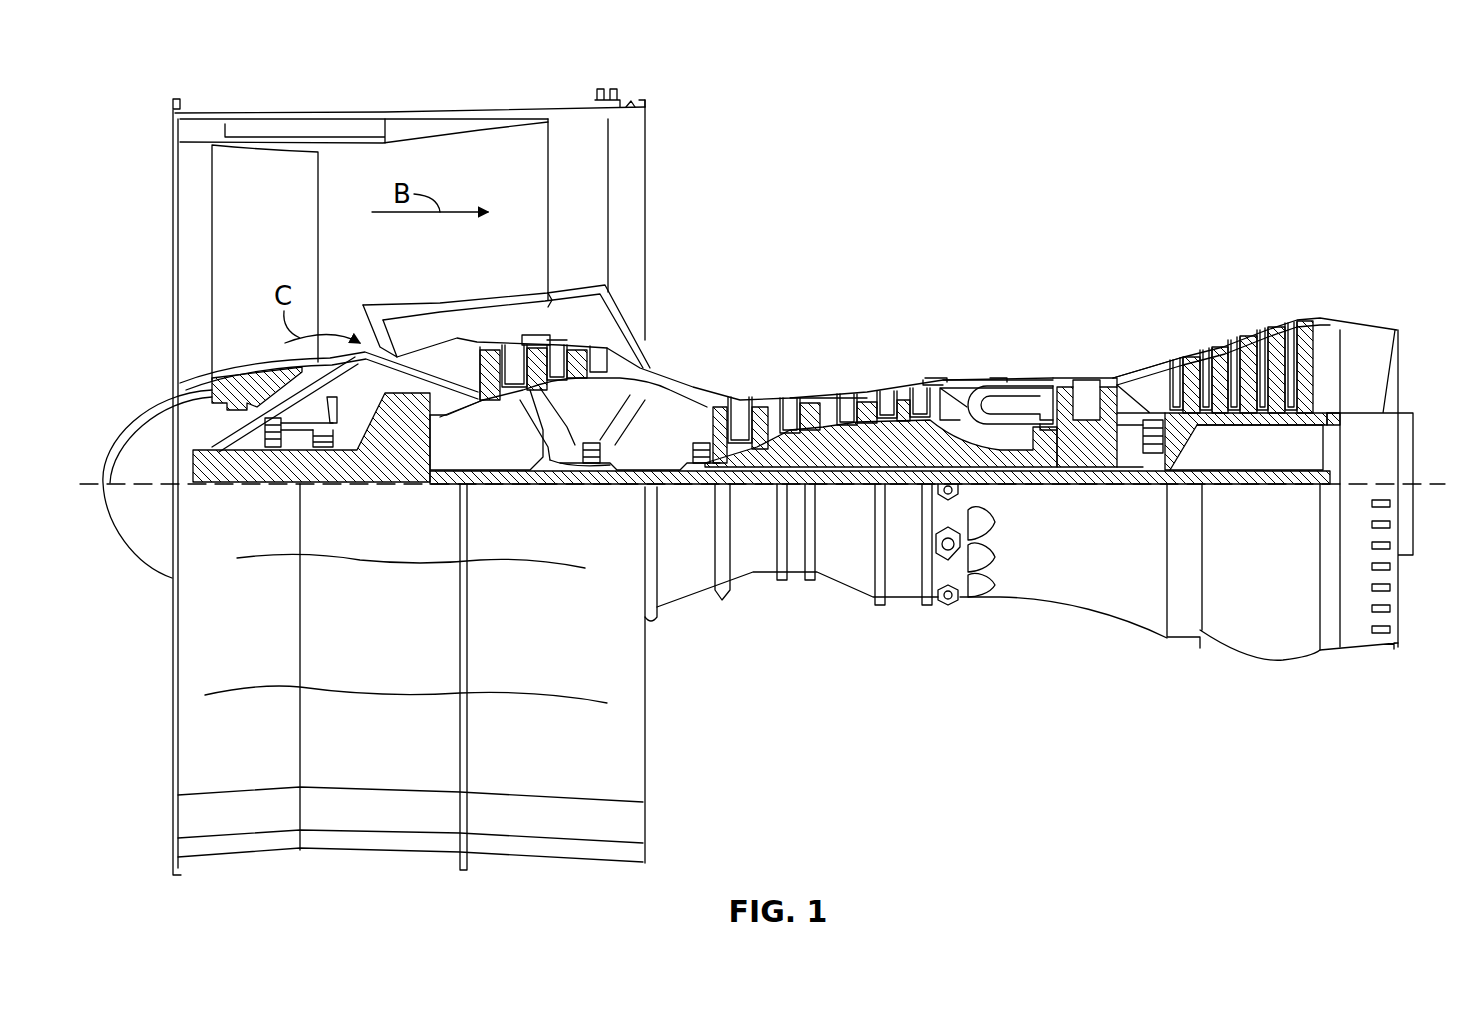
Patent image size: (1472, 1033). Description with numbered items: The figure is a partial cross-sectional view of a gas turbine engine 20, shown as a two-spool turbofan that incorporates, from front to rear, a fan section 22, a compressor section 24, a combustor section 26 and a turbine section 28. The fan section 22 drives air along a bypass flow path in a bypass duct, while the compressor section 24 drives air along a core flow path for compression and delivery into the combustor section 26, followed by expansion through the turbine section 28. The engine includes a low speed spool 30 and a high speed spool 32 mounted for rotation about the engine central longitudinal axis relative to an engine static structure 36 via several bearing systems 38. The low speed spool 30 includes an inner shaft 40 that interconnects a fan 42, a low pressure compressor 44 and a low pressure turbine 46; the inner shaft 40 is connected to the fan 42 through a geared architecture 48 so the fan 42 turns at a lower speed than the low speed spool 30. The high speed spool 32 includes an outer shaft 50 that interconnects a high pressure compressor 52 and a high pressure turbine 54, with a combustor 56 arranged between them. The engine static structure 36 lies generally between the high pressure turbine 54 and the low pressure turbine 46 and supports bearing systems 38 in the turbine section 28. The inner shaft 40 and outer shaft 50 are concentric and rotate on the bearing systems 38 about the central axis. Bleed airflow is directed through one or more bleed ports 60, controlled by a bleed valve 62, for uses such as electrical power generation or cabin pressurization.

The gas turbine engine 20 is at (1220, 152).
The fan section 22 is at (284, 110).
The compressor section 24 is at (838, 342).
The combustor section 26 is at (1000, 342).
The turbine section 28 is at (1150, 325).
The low speed spool 30 is at (862, 490).
The high speed spool 32 is at (918, 430).
The engine static structure 36 is at (907, 600).
The bearing systems 38 is at (275, 447).
The inner shaft 40 is at (660, 480).
The fan 42 is at (259, 236).
The low pressure compressor 44 is at (560, 365).
The low pressure turbine 46 is at (1250, 345).
The geared architecture 48 is at (410, 457).
The outer shaft 50 is at (1028, 465).
The high pressure compressor 52 is at (825, 450).
The high pressure turbine 54 is at (1088, 378).
The combustor 56 is at (1010, 405).
The bleed ports 60 is at (553, 340).
The bleed valve 62 is at (530, 335).